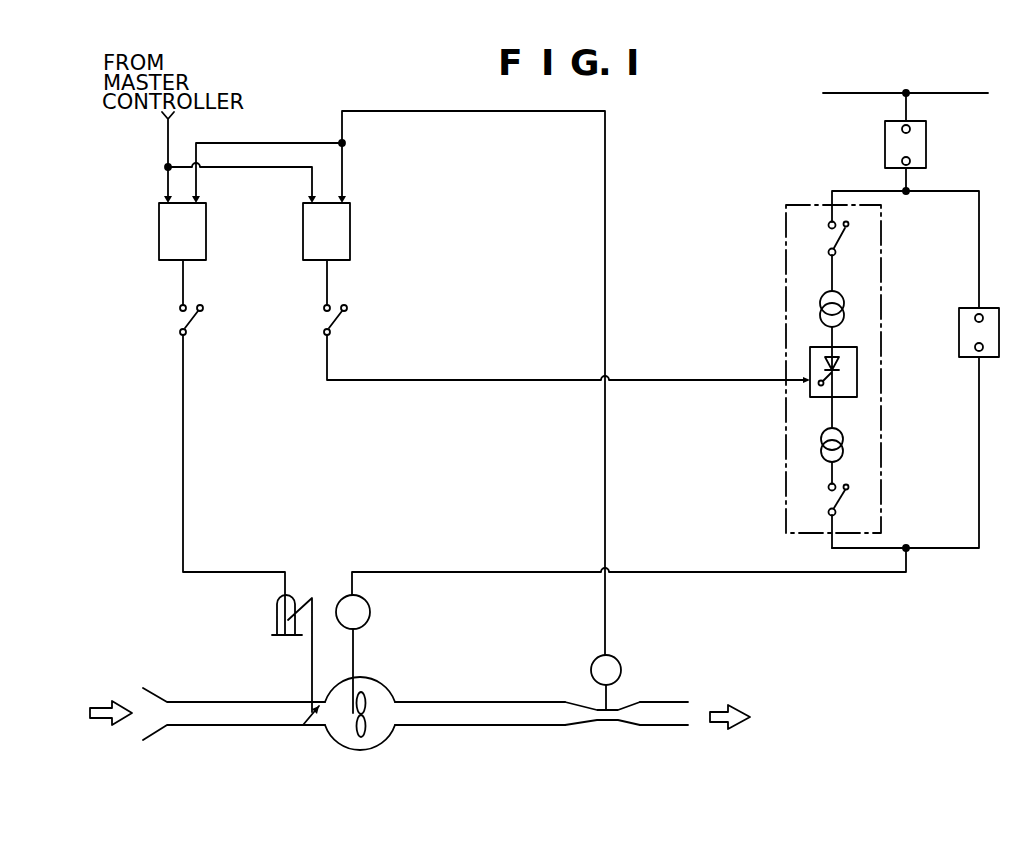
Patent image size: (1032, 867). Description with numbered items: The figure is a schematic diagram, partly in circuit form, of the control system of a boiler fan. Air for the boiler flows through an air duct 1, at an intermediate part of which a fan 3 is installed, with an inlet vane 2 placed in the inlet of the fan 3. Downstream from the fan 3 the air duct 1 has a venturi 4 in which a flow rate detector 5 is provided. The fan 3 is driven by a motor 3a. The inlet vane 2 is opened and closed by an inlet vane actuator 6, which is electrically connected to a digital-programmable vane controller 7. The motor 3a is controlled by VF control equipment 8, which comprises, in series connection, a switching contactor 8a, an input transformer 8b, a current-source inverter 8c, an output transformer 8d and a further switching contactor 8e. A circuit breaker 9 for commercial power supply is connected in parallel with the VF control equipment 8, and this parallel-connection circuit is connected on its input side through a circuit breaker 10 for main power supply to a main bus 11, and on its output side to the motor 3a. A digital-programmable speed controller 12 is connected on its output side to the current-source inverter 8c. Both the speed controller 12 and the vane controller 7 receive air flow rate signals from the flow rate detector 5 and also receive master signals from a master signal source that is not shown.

The air duct 1 is at (222, 725).
The inlet vane 2 is at (310, 724).
The fan 3 is at (366, 735).
The motor 3a is at (371, 611).
The venturi 4 is at (606, 721).
The flow rate detector 5 is at (630, 648).
The inlet vane actuator 6 is at (277, 618).
The vane controller 7 is at (159, 236).
The VF control equipment 8 is at (786, 242).
The switching contactor 8a is at (829, 247).
The input transformer 8b is at (818, 319).
The current-source inverter 8c is at (858, 368).
The output transformer 8d is at (816, 456).
The switching contactor 8e is at (830, 501).
The circuit breaker for commercial power supply 9 is at (1000, 337).
The circuit breaker for main power supply 10 is at (926, 142).
The main bus 11 is at (942, 97).
The speed controller 12 is at (350, 233).